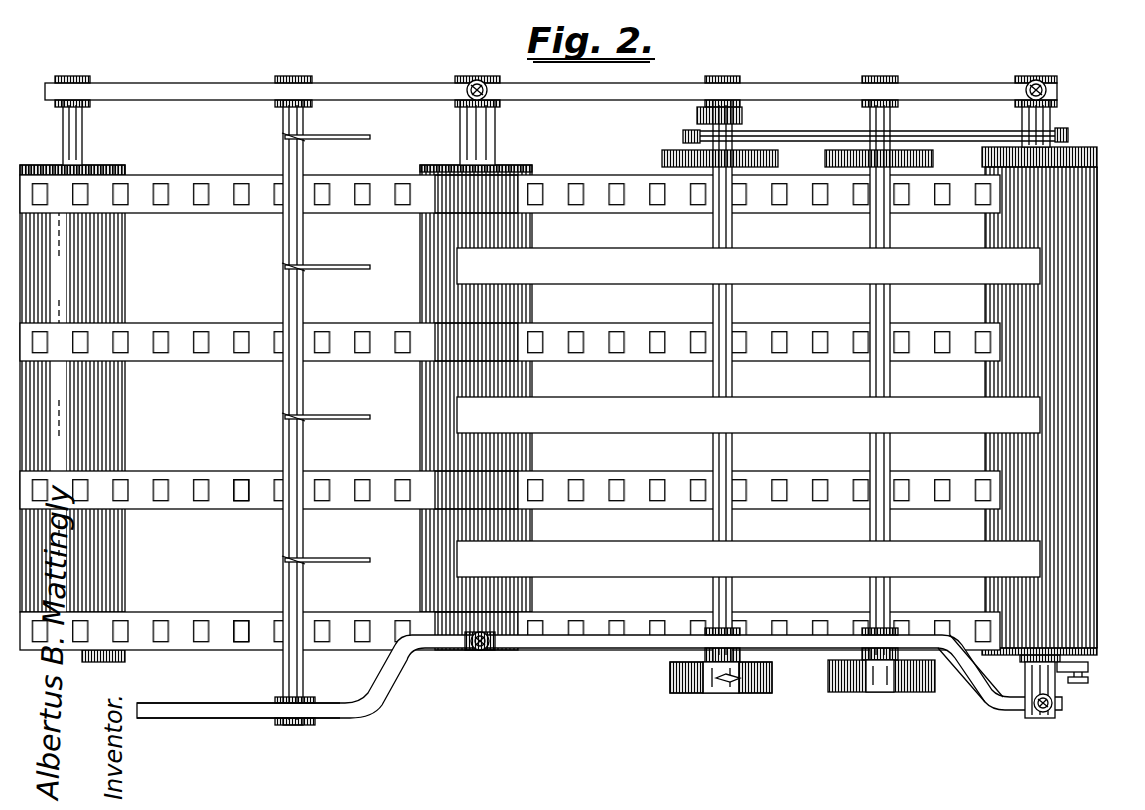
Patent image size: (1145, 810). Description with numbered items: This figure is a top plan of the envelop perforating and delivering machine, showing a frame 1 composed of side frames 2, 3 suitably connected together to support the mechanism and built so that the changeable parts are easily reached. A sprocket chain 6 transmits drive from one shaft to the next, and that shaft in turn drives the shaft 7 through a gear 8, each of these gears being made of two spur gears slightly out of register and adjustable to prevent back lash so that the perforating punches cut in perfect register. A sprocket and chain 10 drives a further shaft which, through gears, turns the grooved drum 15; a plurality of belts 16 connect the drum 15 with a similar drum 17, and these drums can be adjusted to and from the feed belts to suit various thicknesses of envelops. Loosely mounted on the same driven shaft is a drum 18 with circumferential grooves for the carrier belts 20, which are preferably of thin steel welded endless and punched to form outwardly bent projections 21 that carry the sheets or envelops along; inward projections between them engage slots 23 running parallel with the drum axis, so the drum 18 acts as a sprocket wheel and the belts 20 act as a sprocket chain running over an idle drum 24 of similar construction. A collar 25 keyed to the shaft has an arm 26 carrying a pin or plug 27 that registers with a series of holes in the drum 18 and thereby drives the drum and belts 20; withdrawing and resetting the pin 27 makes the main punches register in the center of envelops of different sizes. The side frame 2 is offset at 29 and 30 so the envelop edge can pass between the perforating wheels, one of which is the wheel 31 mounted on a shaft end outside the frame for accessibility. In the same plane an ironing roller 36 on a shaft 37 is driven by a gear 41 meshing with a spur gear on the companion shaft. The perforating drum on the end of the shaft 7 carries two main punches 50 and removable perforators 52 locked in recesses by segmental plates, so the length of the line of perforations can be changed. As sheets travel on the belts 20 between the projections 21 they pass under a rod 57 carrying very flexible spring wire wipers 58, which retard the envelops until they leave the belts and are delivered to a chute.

The frame 1 is at (190, 97).
The side frame 2 is at (410, 82).
The side frame 3 is at (360, 706).
The sprocket chain 6 is at (698, 115).
The shaft 7 is at (730, 306).
The gear 8 is at (663, 158).
The sprocket and chain 10 is at (801, 138).
The drum 15 is at (1000, 300).
The belts 16 is at (594, 404).
The drum 17 is at (520, 302).
The drum 18 is at (1090, 362).
The belts 20 is at (211, 326).
The projections 21 is at (238, 490).
The slots 23 is at (73, 388).
The idle drum 24 is at (115, 441).
The collar 25 is at (1029, 686).
The arm 26 is at (1090, 668).
The pin or plug 27 is at (1079, 686).
The offset 29 is at (372, 672).
The offset 30 is at (992, 690).
The perforating wheel 31 is at (672, 683).
The ironing roller 36 is at (870, 683).
The shaft 37 is at (872, 302).
The gear 41 is at (922, 150).
The main punches 50 is at (725, 690).
The perforators 52 is at (700, 690).
The shaft or rod 57 is at (305, 388).
The wipers 58 is at (349, 268).